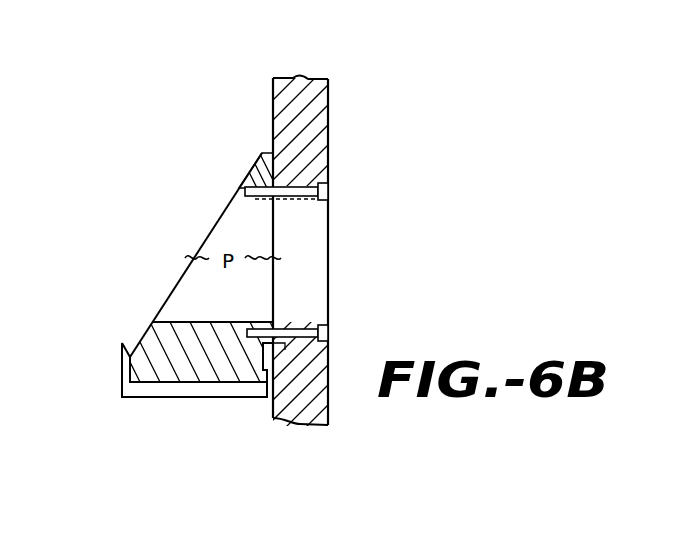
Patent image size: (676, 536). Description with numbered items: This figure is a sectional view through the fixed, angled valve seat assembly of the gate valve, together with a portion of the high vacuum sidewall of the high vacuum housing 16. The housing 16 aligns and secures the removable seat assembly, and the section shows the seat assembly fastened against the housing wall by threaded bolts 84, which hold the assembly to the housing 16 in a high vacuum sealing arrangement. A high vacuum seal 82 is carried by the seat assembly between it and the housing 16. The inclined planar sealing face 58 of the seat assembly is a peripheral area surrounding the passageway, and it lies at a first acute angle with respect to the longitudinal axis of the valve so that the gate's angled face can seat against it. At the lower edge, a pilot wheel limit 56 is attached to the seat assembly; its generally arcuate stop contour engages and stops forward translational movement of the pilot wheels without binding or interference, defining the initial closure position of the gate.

The high vacuum housing 16 is at (330, 95).
The pilot wheel limit 56 is at (157, 387).
The planar sealing face 58 is at (247, 192).
The high vacuum seal 82 is at (264, 172).
The threaded bolt 84 is at (330, 193).